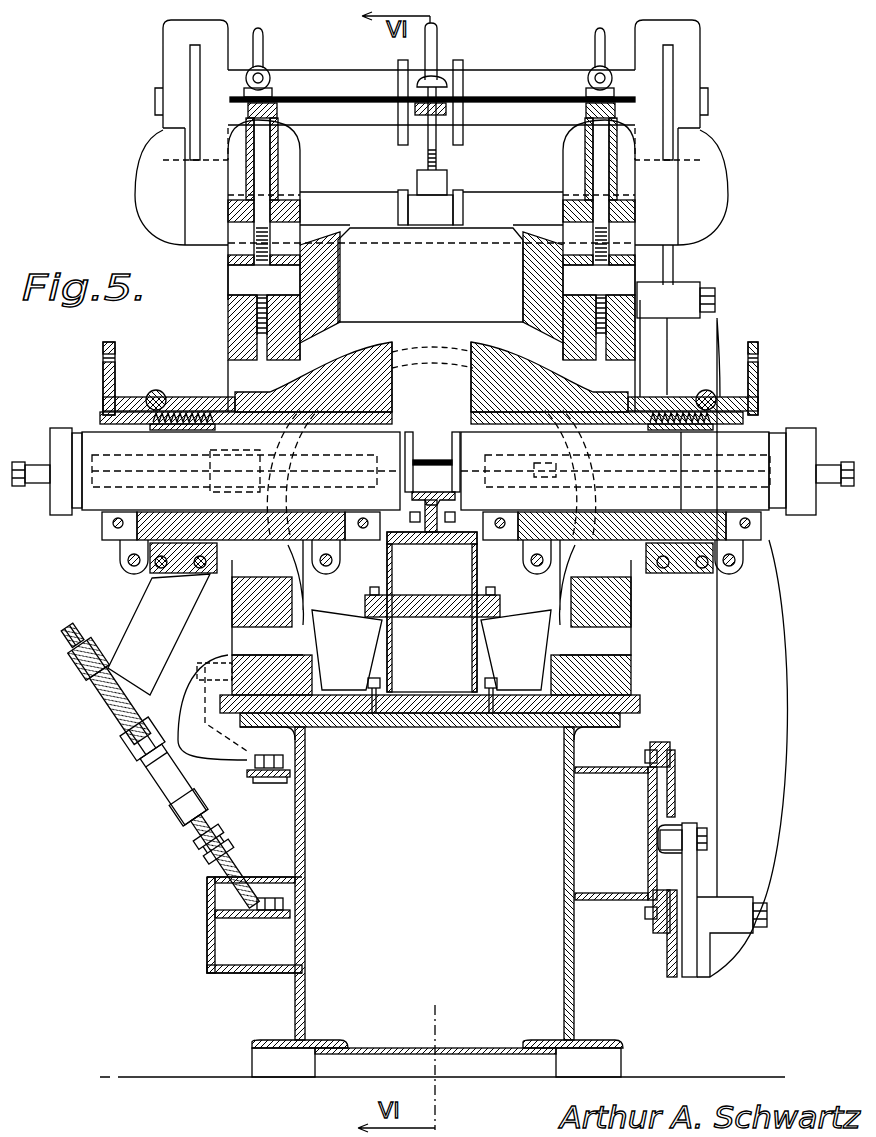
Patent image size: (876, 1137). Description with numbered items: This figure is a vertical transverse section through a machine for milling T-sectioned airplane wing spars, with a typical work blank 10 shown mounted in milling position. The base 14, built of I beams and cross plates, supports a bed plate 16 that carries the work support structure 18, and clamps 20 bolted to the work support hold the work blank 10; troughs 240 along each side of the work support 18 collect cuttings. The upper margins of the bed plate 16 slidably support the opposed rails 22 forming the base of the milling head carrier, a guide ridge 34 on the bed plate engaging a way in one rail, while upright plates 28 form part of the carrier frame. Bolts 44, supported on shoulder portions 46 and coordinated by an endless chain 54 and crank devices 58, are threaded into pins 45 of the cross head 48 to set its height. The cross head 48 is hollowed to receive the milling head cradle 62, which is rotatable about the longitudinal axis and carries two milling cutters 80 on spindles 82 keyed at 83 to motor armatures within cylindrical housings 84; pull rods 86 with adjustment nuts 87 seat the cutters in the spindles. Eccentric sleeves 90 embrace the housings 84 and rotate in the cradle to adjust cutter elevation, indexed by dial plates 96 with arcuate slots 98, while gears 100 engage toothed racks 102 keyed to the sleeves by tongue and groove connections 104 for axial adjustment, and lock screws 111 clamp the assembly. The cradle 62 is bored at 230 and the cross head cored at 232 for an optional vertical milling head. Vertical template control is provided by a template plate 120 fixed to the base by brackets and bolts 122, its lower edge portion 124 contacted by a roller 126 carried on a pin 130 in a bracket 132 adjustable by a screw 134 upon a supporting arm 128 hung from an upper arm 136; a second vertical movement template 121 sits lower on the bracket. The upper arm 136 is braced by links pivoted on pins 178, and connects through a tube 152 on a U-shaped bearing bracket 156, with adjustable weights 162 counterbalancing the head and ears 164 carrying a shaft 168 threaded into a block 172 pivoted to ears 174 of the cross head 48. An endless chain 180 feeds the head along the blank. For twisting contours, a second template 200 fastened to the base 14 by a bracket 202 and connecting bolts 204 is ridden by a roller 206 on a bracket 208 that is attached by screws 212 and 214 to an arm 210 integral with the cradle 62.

The work blank 10 is at (433, 512).
The base 14 is at (437, 902).
The bed plate 16 is at (432, 717).
The work support structure 18 is at (433, 617).
The clamps 20 is at (435, 537).
The rails 22 is at (320, 670).
The upright plates 28 is at (302, 211).
The guide ridge 34 is at (308, 723).
The bolts 44 is at (262, 173).
The pins 45 is at (235, 282).
The shoulder portions 46 is at (272, 91).
The cross head 48 is at (411, 285).
The endless chain 54 is at (335, 97).
The crank devices 58 is at (263, 35).
The milling head cradle 62 is at (367, 342).
The milling cutters 80 is at (441, 458).
The spindles 82 is at (487, 432).
The key 83 is at (248, 417).
The cylindrical housings 84 is at (87, 437).
The pull rods 86 is at (58, 448).
The adjustment nuts 87 is at (38, 465).
The eccentric sleeves 90 is at (117, 553).
The dial plates 96 is at (103, 343).
The arcuate slots 98 is at (103, 365).
The gears 100 is at (155, 390).
The toothed racks 102 is at (192, 417).
The tongue and groove connections 104 is at (170, 423).
The lock screws 111 is at (110, 525).
The template plate 120 is at (667, 795).
The vertical movement template 121 is at (667, 955).
The brackets and bolts 122 is at (647, 755).
The lower edge portion 124 is at (660, 837).
The roller 126 is at (672, 847).
The supporting arm 128 is at (751, 750).
The pin 130 is at (707, 840).
The bracket 132 is at (689, 970).
The screw 134 is at (767, 913).
The upper arm 136 is at (673, 262).
The tube 152 is at (519, 75).
The U-shaped bearing bracket 156 is at (138, 190).
The adjustable weights 162 is at (172, 37).
The ears 164 is at (398, 84).
The shaft 168 is at (437, 35).
The block 172 is at (432, 229).
The ears 174 is at (463, 212).
The pins 178 is at (713, 300).
The endless chain 180 is at (267, 897).
The second template 200 is at (187, 820).
The bracket 202 is at (197, 896).
The connecting bolts 204 is at (200, 848).
The roller 206 is at (157, 778).
The bracket 208 is at (128, 705).
The arm 210 is at (153, 607).
The screw 212 is at (90, 680).
The screw 214 is at (63, 630).
The bore 230 is at (468, 352).
The central core 232 is at (523, 268).
The troughs 240 is at (337, 623).